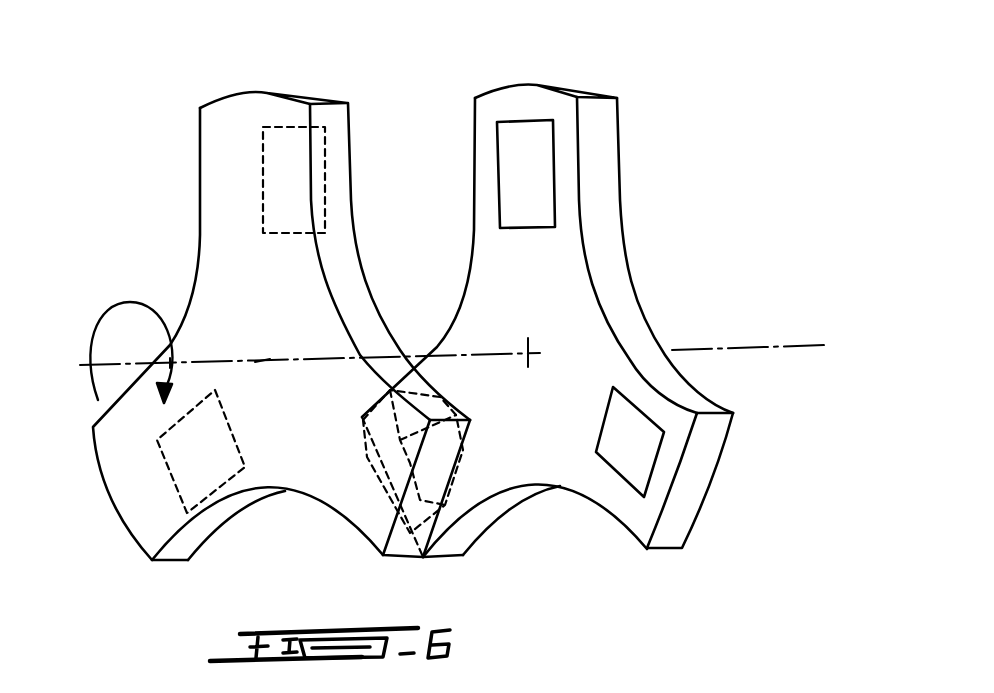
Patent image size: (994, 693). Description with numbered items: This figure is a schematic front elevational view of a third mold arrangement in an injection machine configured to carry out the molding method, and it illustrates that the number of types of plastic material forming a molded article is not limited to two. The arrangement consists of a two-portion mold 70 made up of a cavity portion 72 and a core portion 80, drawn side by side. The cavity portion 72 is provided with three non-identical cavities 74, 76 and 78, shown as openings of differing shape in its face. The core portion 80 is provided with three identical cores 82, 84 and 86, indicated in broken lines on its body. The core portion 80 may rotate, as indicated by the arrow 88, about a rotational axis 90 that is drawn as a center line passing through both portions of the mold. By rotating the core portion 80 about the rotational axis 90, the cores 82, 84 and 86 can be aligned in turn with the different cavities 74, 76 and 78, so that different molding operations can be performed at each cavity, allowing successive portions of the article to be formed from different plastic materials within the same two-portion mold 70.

The two-portion mold 70 is at (191, 70).
The cavity portion 72 is at (623, 287).
The cavity 74 is at (537, 167).
The cavity 76 is at (637, 460).
The cavity 78 is at (450, 497).
The core portion 80 is at (198, 167).
The core 82 is at (325, 160).
The core 84 is at (363, 468).
The core 86 is at (170, 480).
The arrow 88 is at (110, 303).
The rotational axis 90 is at (262, 365).